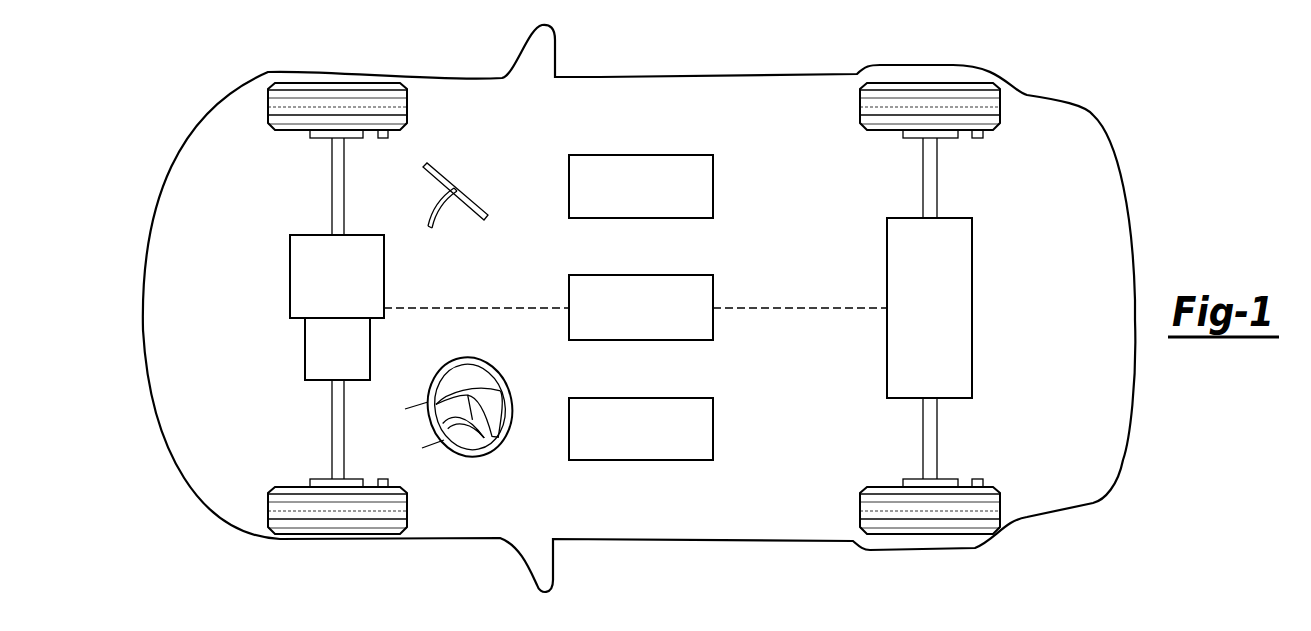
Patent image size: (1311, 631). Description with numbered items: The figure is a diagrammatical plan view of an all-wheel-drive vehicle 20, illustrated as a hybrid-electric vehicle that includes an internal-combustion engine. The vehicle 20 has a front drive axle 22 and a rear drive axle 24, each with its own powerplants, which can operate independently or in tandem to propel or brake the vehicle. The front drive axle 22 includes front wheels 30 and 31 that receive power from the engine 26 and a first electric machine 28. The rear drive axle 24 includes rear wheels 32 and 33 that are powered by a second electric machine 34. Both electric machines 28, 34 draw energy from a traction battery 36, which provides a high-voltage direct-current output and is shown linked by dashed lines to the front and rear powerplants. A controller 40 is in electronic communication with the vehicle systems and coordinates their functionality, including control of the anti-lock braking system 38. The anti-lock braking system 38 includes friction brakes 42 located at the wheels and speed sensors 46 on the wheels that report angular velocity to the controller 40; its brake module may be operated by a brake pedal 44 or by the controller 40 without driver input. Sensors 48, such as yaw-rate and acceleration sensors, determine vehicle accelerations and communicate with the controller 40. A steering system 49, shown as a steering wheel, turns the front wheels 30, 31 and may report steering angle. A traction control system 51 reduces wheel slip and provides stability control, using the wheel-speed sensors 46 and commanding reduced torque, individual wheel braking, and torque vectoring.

The all-wheel-drive vehicle 20 is at (700, 73).
The front drive axle 22 is at (262, 252).
The rear drive axle 24 is at (994, 266).
The engine 26 is at (326, 285).
The first electric machine 28 is at (327, 358).
The front wheel 30 is at (337, 534).
The front wheel 31 is at (337, 83).
The rear wheel 32 is at (930, 534).
The rear wheel 33 is at (930, 83).
The second electric machine 34 is at (920, 313).
The traction battery 36 is at (713, 290).
The anti-lock braking system 38 is at (974, 181).
The controller 40 is at (640, 155).
The friction brake 42 is at (908, 138).
The brake pedal 44 is at (452, 181).
The speed sensor 46 is at (978, 138).
The sensors 48 is at (641, 460).
The steering system 49 is at (480, 353).
The traction control system 51 is at (754, 216).